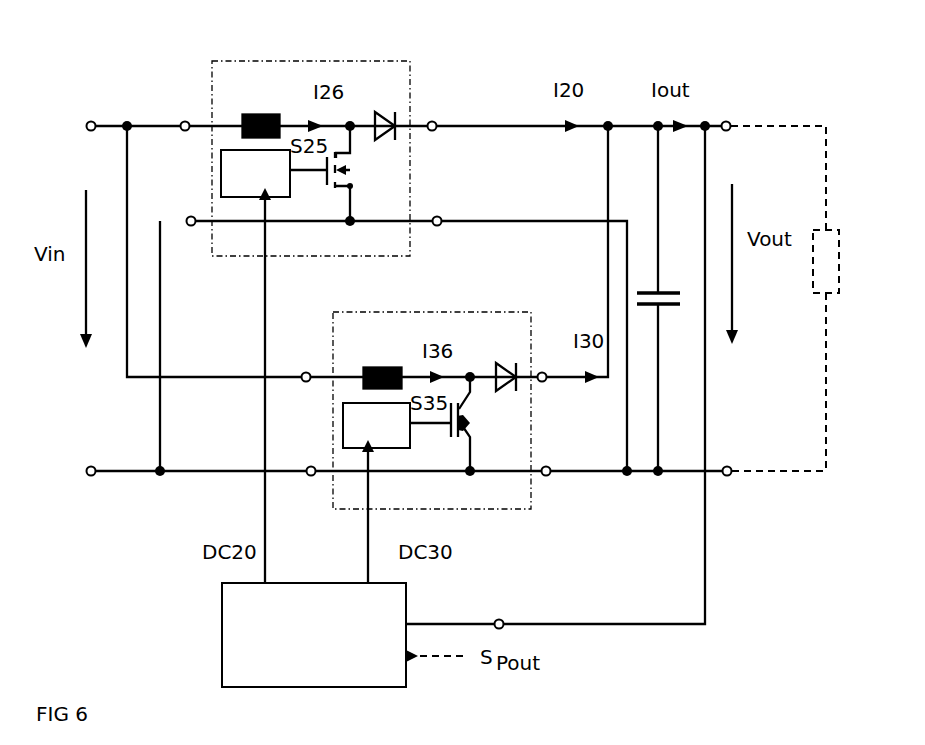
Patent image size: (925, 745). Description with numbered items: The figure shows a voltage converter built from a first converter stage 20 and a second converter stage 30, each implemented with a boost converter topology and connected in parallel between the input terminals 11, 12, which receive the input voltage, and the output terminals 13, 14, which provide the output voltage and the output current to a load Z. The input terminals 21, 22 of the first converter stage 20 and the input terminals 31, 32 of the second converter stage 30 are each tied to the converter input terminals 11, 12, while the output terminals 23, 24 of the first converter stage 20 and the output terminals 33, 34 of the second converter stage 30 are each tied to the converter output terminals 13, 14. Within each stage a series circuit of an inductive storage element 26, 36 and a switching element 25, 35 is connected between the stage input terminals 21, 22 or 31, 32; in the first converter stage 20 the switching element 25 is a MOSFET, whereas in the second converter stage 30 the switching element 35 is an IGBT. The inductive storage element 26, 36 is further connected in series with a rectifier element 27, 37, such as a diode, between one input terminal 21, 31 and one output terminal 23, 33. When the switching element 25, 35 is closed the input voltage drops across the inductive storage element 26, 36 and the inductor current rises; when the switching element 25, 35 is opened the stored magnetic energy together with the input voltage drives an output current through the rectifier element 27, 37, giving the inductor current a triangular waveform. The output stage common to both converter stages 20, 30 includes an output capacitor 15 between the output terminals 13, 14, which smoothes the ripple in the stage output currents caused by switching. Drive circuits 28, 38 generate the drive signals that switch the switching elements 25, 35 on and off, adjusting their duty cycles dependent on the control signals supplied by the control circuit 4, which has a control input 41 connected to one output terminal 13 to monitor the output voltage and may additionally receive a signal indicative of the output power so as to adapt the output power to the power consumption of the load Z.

The control circuit 4 is at (312, 582).
The input terminal 11 is at (89, 122).
The input terminal 12 is at (89, 466).
The output terminal 13 is at (727, 121).
The output terminal 14 is at (728, 466).
The output capacitor 15 is at (671, 288).
The first converter stage 20 is at (307, 56).
The input terminal of the first converter stage 21 is at (183, 122).
The input terminal of the first converter stage 22 is at (190, 216).
The output terminal of the first converter stage 23 is at (434, 121).
The output terminal of the first converter stage 24 is at (440, 216).
The switching element 25 is at (355, 174).
The inductive storage element 26 is at (261, 109).
The rectifier element 27 is at (386, 105).
The drive circuit 28 is at (290, 187).
The second converter stage 30 is at (427, 308).
The input terminal of the second converter stage 31 is at (304, 372).
The input terminal of the second converter stage 32 is at (309, 466).
The output terminal of the second converter stage 33 is at (544, 372).
The output terminal of the second converter stage 34 is at (548, 466).
The switching element 35 is at (479, 423).
The inductive storage element 36 is at (382, 359).
The rectifier element 37 is at (506, 357).
The drive circuit 38 is at (410, 438).
The control input 41 is at (501, 619).
The load Z is at (842, 259).